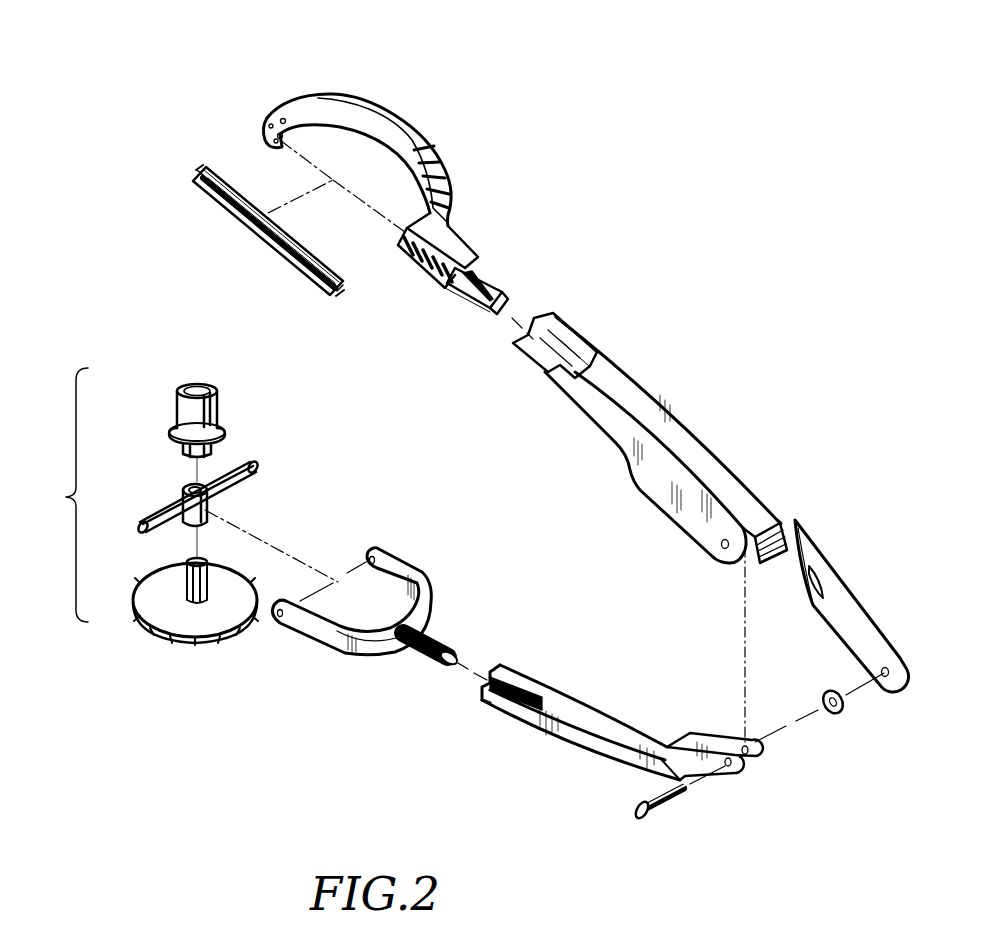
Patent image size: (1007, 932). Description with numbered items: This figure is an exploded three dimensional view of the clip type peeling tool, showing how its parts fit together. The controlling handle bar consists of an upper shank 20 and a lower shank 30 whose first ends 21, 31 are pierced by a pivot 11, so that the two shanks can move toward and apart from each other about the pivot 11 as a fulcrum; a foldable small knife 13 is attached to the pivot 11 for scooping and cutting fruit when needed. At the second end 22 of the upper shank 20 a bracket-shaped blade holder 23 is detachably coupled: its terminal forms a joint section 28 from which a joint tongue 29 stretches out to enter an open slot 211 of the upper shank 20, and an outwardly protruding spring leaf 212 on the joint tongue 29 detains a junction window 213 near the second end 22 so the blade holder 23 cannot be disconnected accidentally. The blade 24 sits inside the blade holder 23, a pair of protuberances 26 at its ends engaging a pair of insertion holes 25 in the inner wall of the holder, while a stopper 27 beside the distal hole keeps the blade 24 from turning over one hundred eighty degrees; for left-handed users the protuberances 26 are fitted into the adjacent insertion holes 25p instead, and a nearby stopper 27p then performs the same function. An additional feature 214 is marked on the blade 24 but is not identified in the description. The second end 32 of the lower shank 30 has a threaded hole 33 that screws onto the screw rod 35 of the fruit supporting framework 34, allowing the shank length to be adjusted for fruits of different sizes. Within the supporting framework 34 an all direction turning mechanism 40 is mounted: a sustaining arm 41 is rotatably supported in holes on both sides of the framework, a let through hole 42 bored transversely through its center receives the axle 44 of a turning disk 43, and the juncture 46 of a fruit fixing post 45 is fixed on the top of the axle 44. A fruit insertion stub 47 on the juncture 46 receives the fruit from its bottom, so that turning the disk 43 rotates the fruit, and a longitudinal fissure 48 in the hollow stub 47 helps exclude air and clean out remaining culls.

The pivot 11 is at (633, 808).
The foldable small knife 13 is at (813, 548).
The upper shank 20 is at (684, 445).
The first end 21 is at (716, 538).
The second end 22 is at (549, 320).
The blade holder 23 is at (393, 116).
The blade 24 is at (273, 250).
The insertion hole 25 is at (276, 143).
The insertion hole 25p is at (270, 127).
The protuberance 26 is at (200, 173).
The stopper 27 is at (282, 137).
The stopper 27p is at (286, 120).
The joint section 28 is at (450, 238).
The joint tongue 29 is at (463, 290).
The lower shank 30 is at (543, 740).
The first end 31 is at (728, 772).
The second end 32 is at (520, 667).
The threaded hole 33 is at (492, 702).
The supporting framework 34 is at (311, 634).
The screw rod 35 is at (418, 656).
The all direction turning mechanism 40 is at (53, 495).
The sustaining arm 41 is at (247, 470).
The let through hole 42 is at (186, 486).
The turning disk 43 is at (155, 615).
The axle 44 is at (185, 578).
The fruit fixing post 45 is at (153, 375).
The juncture 46 is at (182, 447).
The fruit insertion stub 47 is at (223, 422).
The longitudinal fissure 48 is at (207, 380).
The open slot 211 is at (547, 357).
The spring leaf 212 is at (483, 278).
The junction window 213 is at (577, 341).
The groove 214 is at (230, 212).